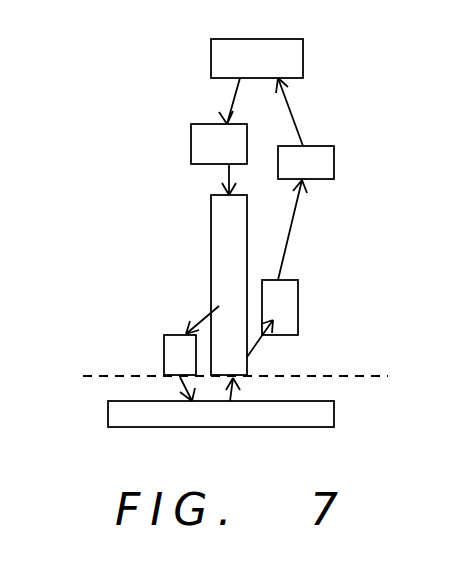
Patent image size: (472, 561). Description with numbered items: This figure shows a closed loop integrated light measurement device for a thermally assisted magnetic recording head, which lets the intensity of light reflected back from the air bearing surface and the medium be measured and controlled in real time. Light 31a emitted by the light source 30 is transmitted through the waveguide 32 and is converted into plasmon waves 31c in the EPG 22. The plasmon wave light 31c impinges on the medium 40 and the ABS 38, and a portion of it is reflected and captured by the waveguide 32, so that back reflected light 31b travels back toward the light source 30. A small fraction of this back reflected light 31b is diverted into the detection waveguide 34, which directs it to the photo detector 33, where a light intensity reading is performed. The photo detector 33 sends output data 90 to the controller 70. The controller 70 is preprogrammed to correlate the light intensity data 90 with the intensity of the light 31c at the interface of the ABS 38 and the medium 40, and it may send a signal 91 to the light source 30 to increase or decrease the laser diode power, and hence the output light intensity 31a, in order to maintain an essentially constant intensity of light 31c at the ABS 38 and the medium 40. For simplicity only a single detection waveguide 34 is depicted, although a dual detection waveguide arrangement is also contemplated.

The controller 70 is at (288, 53).
The signal 91 is at (233, 93).
The output data 90 is at (293, 105).
The light source 30 is at (202, 150).
The photo detector 33 is at (324, 160).
The light 31a is at (208, 176).
The waveguide 32 is at (226, 237).
The back reflected light 31b is at (235, 389).
The detection waveguide 34 is at (282, 301).
The EPG 22 is at (180, 355).
The ABS 38 is at (238, 373).
The plasmon waves 31c is at (186, 388).
The medium 40 is at (323, 414).